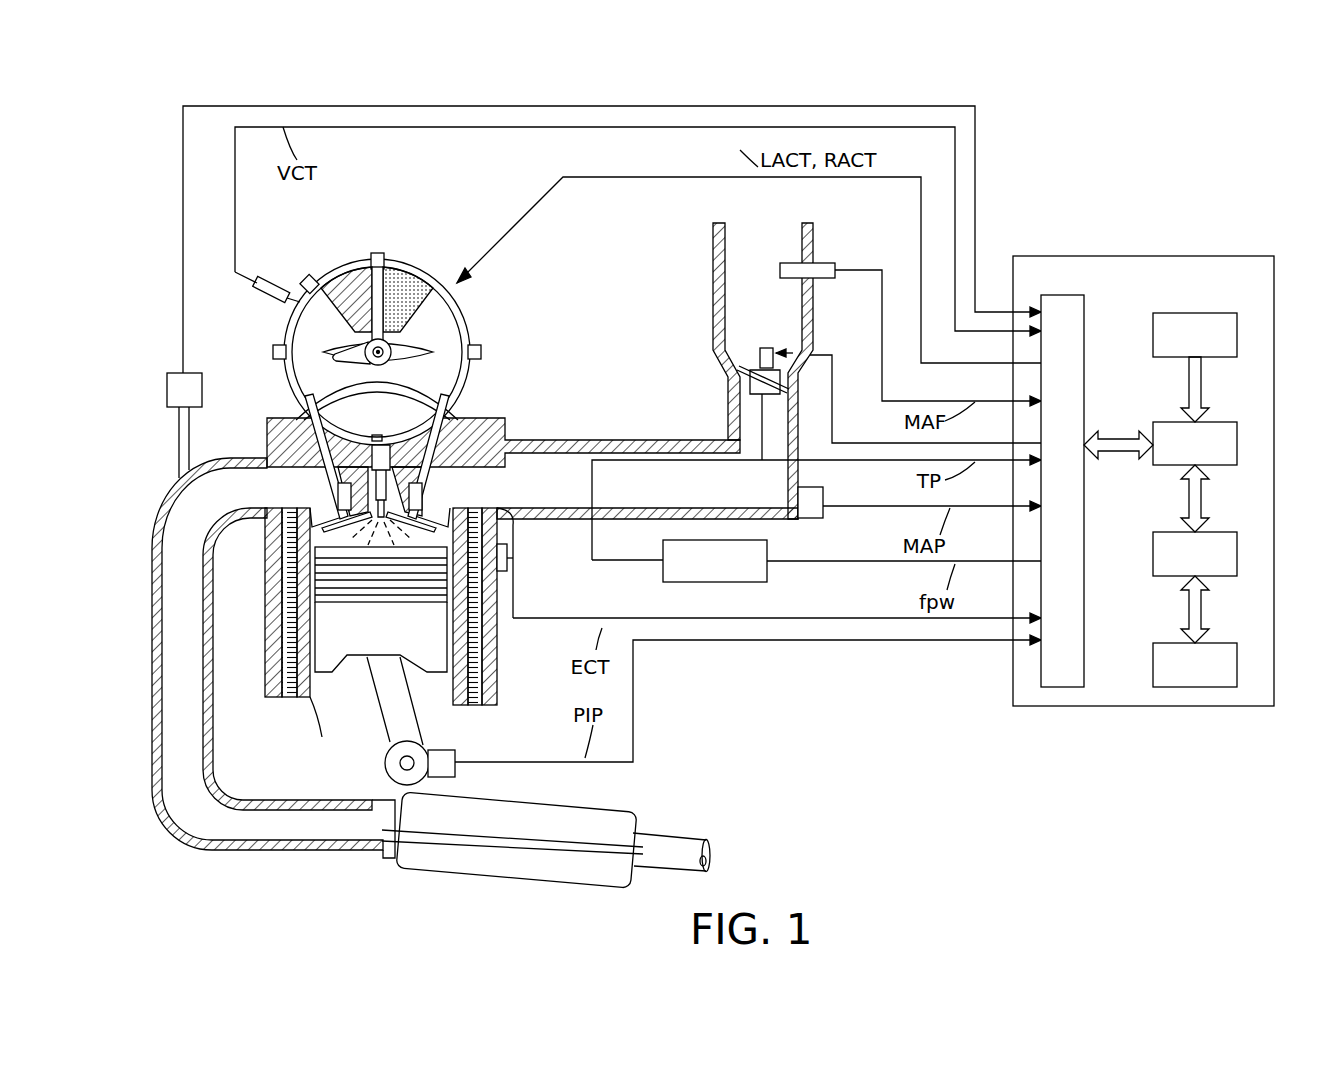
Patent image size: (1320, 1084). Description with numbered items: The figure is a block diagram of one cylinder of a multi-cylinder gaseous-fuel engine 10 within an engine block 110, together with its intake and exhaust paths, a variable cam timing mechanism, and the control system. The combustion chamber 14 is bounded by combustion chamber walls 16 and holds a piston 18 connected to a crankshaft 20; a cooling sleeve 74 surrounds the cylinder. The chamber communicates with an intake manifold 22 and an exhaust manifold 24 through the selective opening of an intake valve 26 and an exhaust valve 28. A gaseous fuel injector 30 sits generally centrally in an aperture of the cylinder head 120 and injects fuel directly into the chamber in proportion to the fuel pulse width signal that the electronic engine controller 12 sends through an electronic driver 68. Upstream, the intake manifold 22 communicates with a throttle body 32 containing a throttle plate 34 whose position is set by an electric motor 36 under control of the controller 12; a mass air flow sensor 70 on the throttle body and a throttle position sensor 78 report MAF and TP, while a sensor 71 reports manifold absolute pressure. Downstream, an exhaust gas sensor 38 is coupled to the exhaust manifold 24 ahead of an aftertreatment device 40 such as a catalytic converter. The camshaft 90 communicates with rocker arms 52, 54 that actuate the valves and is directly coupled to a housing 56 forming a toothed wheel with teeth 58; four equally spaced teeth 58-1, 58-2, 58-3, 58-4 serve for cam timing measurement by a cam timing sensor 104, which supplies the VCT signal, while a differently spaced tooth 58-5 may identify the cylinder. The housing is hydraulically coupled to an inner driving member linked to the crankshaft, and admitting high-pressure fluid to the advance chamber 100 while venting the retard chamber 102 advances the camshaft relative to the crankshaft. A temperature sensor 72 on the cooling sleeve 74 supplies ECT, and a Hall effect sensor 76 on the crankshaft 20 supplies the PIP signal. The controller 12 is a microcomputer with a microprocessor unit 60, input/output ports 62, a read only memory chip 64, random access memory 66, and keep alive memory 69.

The engine 10 is at (1130, 109).
The electronic engine controller 12 is at (1208, 255).
The combustion chamber 14 is at (303, 553).
The combustion chamber walls 16 is at (312, 712).
The piston 18 is at (370, 660).
The crankshaft 20 is at (390, 770).
The intake manifold 22 is at (670, 490).
The exhaust manifold 24 is at (172, 566).
The intake valve 26 is at (443, 506).
The exhaust valve 28 is at (322, 506).
The gaseous fuel injector 30 is at (360, 436).
The throttle body 32 is at (752, 428).
The throttle plate 34 is at (750, 366).
The electric motor 36 is at (766, 345).
The exhaust gas sensor 38 is at (176, 370).
The aftertreatment device 40 is at (582, 812).
The rocker arm 52 is at (300, 412).
The rocker arm 54 is at (462, 412).
The housing 56 is at (285, 374).
The teeth 58 is at (472, 310).
The tooth 58-1 is at (378, 252).
The tooth 58-2 is at (484, 351).
The tooth 58-3 is at (402, 438).
The tooth 58-4 is at (272, 352).
The tooth 58-5 is at (288, 308).
The microprocessor unit 60 is at (1232, 421).
The input/output ports 62 is at (1086, 320).
The read only memory chip 64 is at (732, 283).
The random access memory 66 is at (1232, 531).
The electronic driver 68 is at (770, 548).
The keep alive memory 69 is at (1232, 642).
The mass air flow sensor 70 is at (826, 262).
The manifold absolute pressure sensor 71 is at (827, 498).
The temperature sensor 72 is at (510, 549).
The cooling sleeve 74 is at (500, 665).
The Hall effect sensor 76 is at (462, 754).
The throttle position sensor 78 is at (746, 382).
The camshaft 90 is at (343, 346).
The advance chamber 100 is at (345, 280).
The retard chamber 102 is at (406, 284).
The cam timing sensor 104 is at (255, 296).
The engine block 110 is at (262, 648).
The cylinder head 120 is at (265, 433).